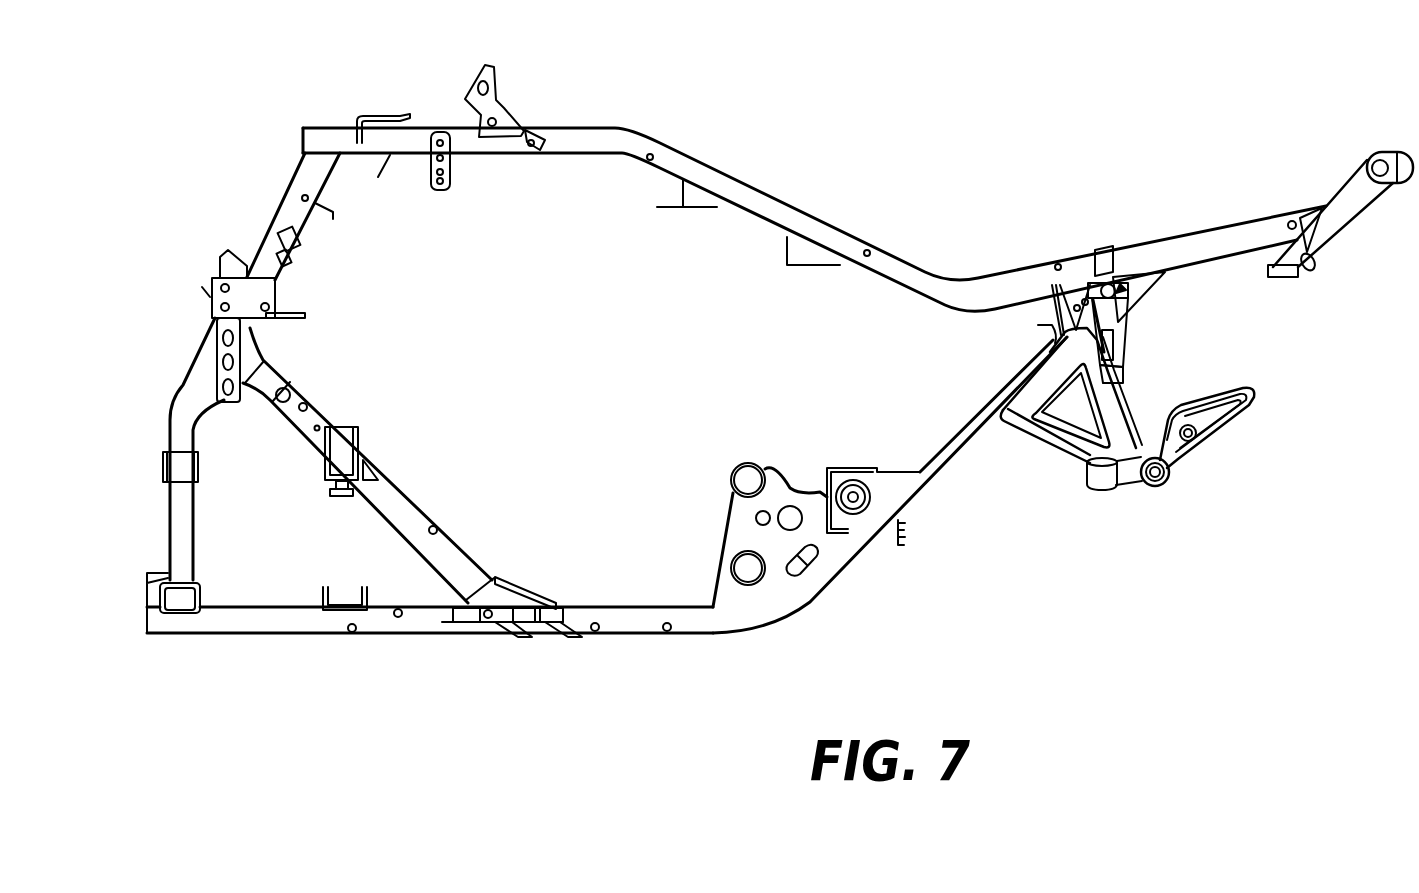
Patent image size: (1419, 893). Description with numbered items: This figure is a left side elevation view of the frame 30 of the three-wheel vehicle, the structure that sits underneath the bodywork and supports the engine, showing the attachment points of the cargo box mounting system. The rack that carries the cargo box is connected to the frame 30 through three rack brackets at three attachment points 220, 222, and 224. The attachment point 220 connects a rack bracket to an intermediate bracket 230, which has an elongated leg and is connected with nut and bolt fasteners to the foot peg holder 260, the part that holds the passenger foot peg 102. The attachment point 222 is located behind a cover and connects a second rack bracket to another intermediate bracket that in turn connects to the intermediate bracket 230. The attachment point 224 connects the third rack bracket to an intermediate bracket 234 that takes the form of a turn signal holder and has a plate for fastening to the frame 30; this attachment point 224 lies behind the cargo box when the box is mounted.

The frame 30 is at (743, 197).
The foot peg 102 is at (747, 478).
The attachment point 222 is at (1117, 291).
The intermediate bracket 234 is at (1346, 184).
The attachment point 224 is at (1316, 272).
The foot peg holder 260 is at (1043, 440).
The intermediate bracket 230 is at (1178, 470).
The attachment point 220 is at (1190, 438).